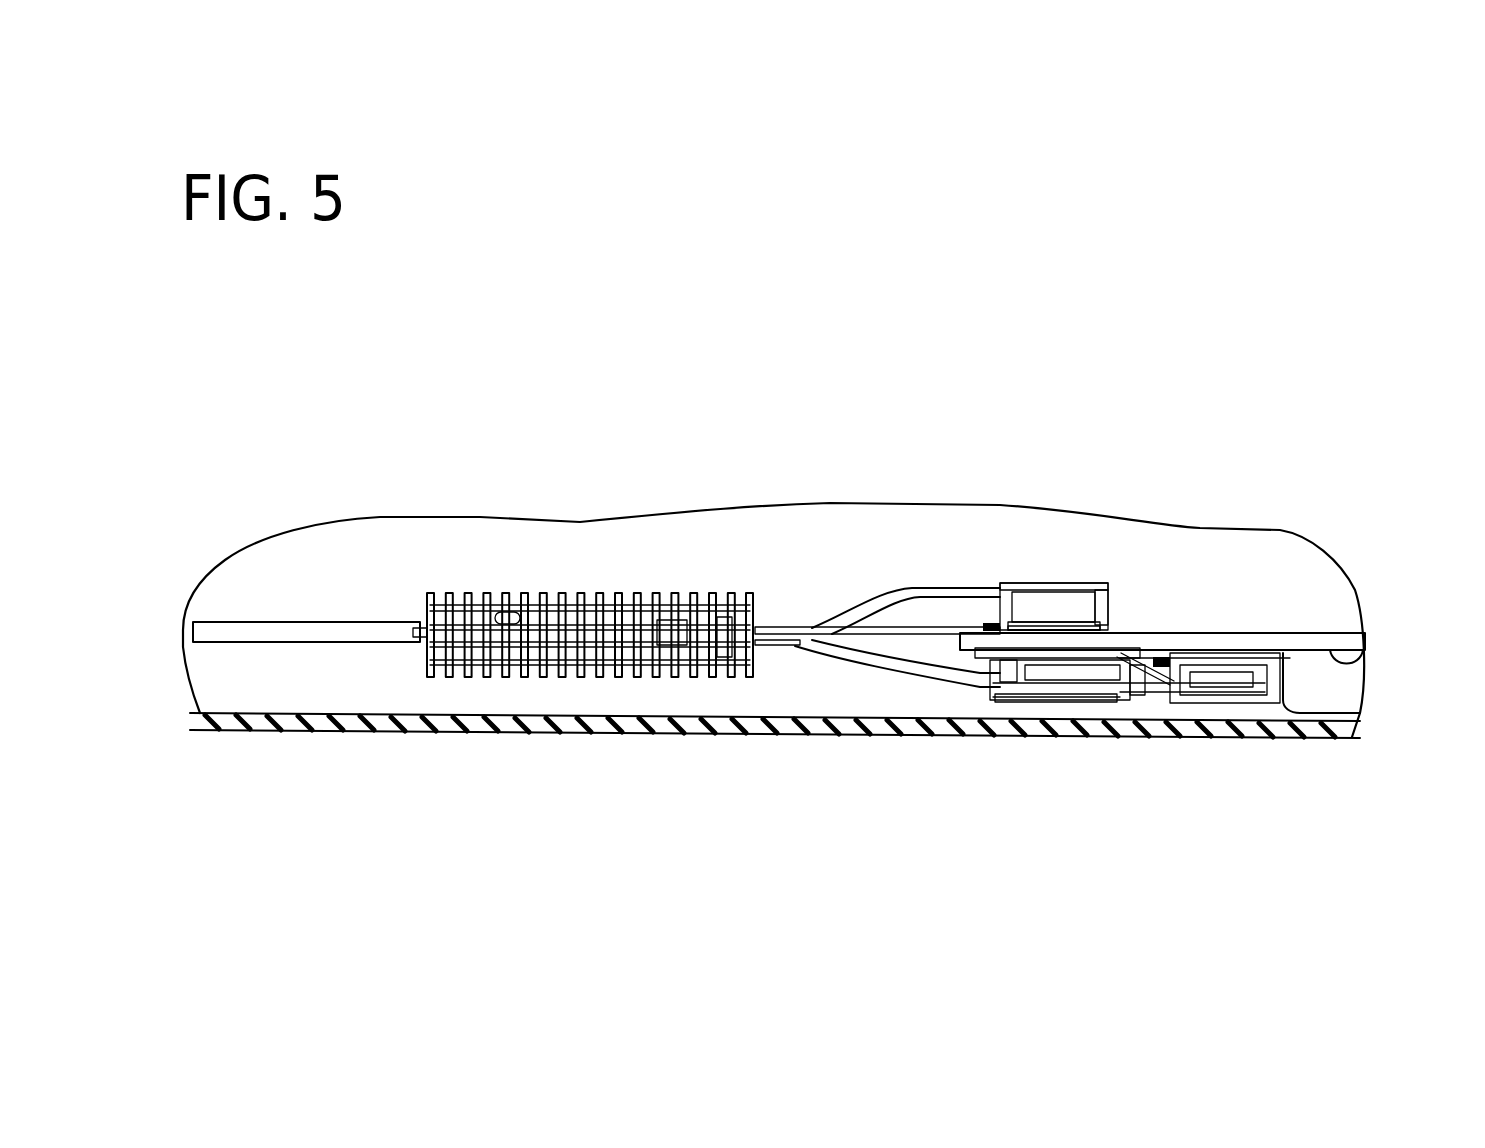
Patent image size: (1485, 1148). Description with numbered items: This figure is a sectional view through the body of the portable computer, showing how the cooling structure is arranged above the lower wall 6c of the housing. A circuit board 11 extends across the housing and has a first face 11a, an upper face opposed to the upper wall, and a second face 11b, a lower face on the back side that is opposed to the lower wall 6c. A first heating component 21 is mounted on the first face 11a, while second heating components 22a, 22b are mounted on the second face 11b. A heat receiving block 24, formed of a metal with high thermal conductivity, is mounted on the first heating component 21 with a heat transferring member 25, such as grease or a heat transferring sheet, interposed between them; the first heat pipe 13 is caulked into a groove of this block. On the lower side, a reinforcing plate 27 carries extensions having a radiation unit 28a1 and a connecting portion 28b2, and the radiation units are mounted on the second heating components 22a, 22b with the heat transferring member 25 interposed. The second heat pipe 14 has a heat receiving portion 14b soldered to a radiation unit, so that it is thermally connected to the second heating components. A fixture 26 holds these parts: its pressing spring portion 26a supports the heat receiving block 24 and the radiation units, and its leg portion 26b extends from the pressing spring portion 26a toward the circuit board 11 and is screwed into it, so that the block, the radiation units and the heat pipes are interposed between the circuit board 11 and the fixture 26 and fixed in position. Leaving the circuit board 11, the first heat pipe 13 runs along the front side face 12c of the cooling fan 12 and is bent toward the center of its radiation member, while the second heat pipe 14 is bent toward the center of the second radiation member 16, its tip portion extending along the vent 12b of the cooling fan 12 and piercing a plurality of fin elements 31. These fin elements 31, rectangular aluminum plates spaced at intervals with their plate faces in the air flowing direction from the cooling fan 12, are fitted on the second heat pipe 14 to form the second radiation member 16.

The lower wall 6c is at (827, 738).
The circuit board 11 is at (1352, 628).
The first face 11a is at (1255, 633).
The second face 11b is at (1367, 664).
The cooling fan 12 is at (665, 600).
The vent 12b is at (518, 612).
The side face 12c is at (757, 622).
The first heat pipe 13 is at (912, 578).
The second heat pipe 14 is at (927, 690).
The heat receiving portion 14b is at (663, 622).
The second radiation member 16 is at (615, 690).
The first heating component 21 is at (1080, 627).
The second heating component 22a is at (1225, 692).
The second heating component 22b is at (1038, 660).
The heat receiving block 24 is at (1030, 605).
The heat transferring member 25 is at (1050, 622).
The fixture 26 is at (1110, 576).
The pressing spring portion 26a is at (1040, 625).
The leg portion 26b is at (985, 623).
The reinforcing plate 27 is at (1100, 690).
The radiation unit 28a1 is at (1150, 655).
The connecting portion 28b2 is at (1070, 682).
The fin element 31 is at (542, 678).